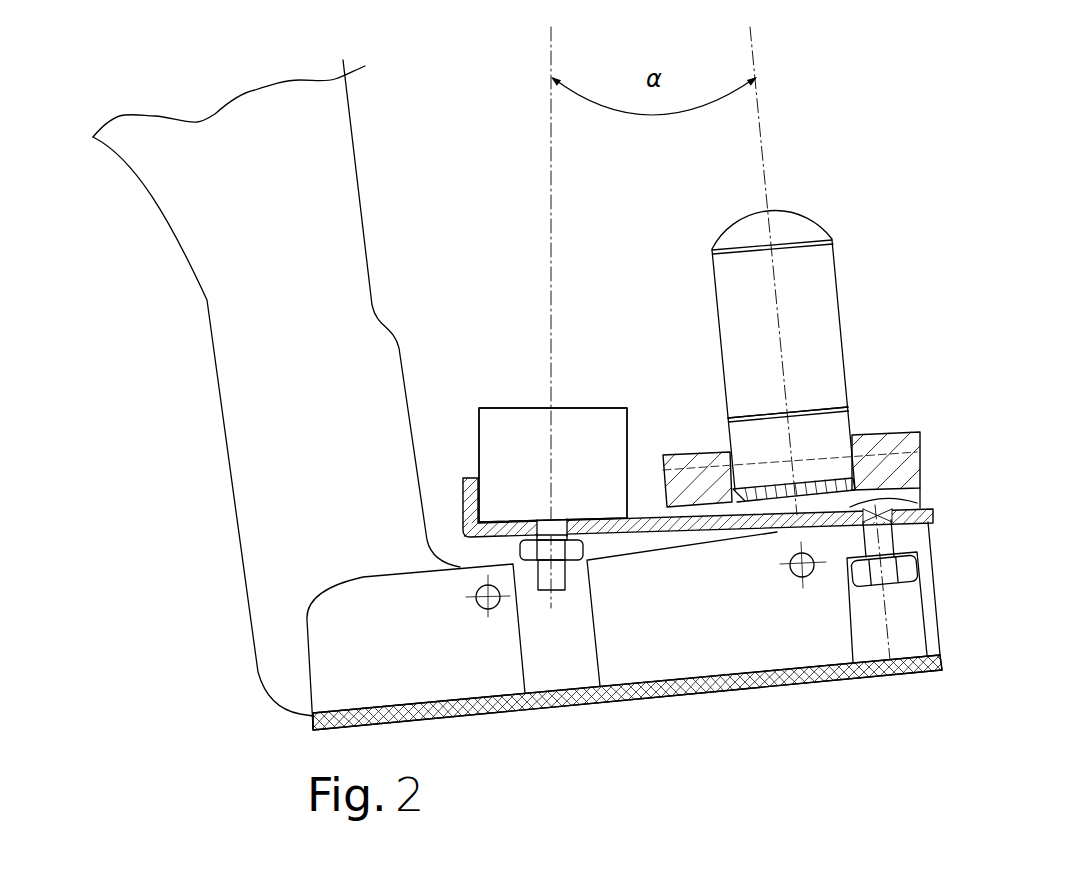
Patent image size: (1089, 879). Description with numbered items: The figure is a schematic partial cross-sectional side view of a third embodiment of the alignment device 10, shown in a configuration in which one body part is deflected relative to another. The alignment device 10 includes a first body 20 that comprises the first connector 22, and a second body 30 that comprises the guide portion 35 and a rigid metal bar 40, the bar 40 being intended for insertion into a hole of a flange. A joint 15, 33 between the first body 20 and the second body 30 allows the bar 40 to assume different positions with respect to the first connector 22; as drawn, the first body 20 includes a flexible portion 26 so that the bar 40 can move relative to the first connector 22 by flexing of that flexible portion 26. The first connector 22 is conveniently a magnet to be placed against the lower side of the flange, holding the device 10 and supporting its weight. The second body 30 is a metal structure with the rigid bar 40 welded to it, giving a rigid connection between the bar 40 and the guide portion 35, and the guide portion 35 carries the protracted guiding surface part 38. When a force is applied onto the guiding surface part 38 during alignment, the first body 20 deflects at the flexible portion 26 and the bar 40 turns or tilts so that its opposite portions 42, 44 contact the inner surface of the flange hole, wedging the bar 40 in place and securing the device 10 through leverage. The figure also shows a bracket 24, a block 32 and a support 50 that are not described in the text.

The alignment device 10 is at (950, 362).
The joint 15 is at (890, 538).
The first body 20 is at (590, 392).
The first connector 22 is at (503, 471).
The angle bracket 24 is at (472, 477).
The flexible portion 26 is at (772, 535).
The second body 30 is at (711, 700).
The clamping block 32 is at (923, 453).
The joint 33 is at (910, 630).
The guide portion 35 is at (281, 297).
The protracted guiding surface part 38 is at (345, 91).
The rigid metal bar 40 is at (742, 362).
The portion of the bar 42 is at (712, 250).
The portion of the bar 44 is at (848, 407).
The support bracket 50 is at (643, 617).